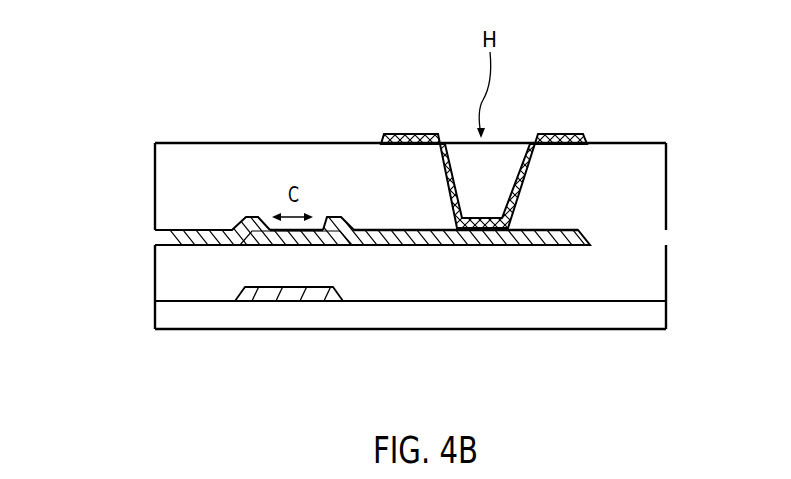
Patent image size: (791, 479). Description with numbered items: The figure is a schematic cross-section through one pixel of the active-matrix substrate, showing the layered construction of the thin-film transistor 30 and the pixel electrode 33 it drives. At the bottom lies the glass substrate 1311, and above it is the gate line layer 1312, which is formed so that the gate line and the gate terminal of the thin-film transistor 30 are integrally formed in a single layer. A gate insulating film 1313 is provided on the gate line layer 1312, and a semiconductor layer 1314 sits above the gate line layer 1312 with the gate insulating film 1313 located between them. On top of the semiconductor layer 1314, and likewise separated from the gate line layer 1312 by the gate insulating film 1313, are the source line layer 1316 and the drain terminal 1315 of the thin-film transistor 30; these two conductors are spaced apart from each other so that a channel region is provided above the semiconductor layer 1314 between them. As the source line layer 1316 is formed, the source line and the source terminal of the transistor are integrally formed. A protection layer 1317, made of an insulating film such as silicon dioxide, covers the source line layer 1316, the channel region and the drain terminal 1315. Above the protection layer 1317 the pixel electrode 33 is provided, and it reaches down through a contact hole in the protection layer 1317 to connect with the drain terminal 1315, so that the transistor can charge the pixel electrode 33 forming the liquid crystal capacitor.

The thin-film transistor 30 is at (315, 185).
The pixel electrode 33 is at (586, 136).
The glass substrate 1311 is at (655, 318).
The gate line layer 1312 is at (297, 295).
The gate insulating film 1313 is at (655, 268).
The semiconductor layer 1314 is at (278, 236).
The drain terminal 1315 is at (562, 231).
The source line layer 1316 is at (155, 237).
The protection layer 1317 is at (655, 181).